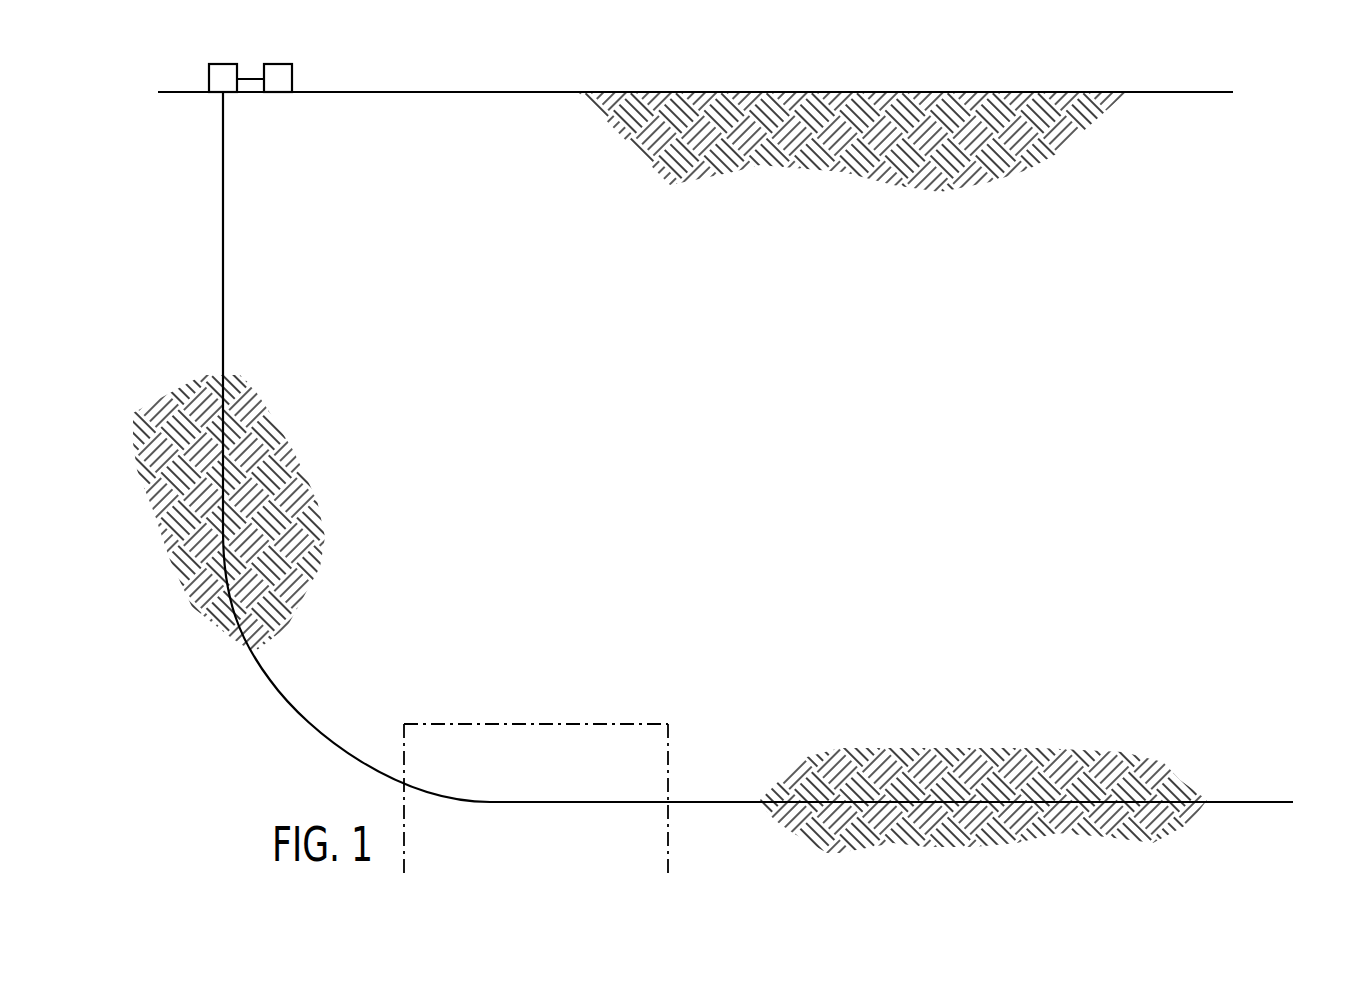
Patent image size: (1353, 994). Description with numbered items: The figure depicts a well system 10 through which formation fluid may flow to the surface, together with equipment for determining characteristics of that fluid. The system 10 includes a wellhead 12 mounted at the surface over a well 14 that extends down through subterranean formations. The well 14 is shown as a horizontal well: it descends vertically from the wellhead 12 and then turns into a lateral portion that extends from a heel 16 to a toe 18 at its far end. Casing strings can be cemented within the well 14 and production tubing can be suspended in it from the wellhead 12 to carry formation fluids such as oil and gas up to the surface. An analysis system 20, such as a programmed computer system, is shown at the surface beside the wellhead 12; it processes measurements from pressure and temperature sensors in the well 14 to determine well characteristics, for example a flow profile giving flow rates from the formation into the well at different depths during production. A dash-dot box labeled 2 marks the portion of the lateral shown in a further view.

The well system 10 is at (150, 157).
The wellhead 12 is at (208, 77).
The analysis system 20 is at (292, 75).
The well 14 is at (224, 305).
The heel 16 is at (303, 717).
The toe 18 is at (1277, 800).
The section view indicator 2 is at (404, 877).